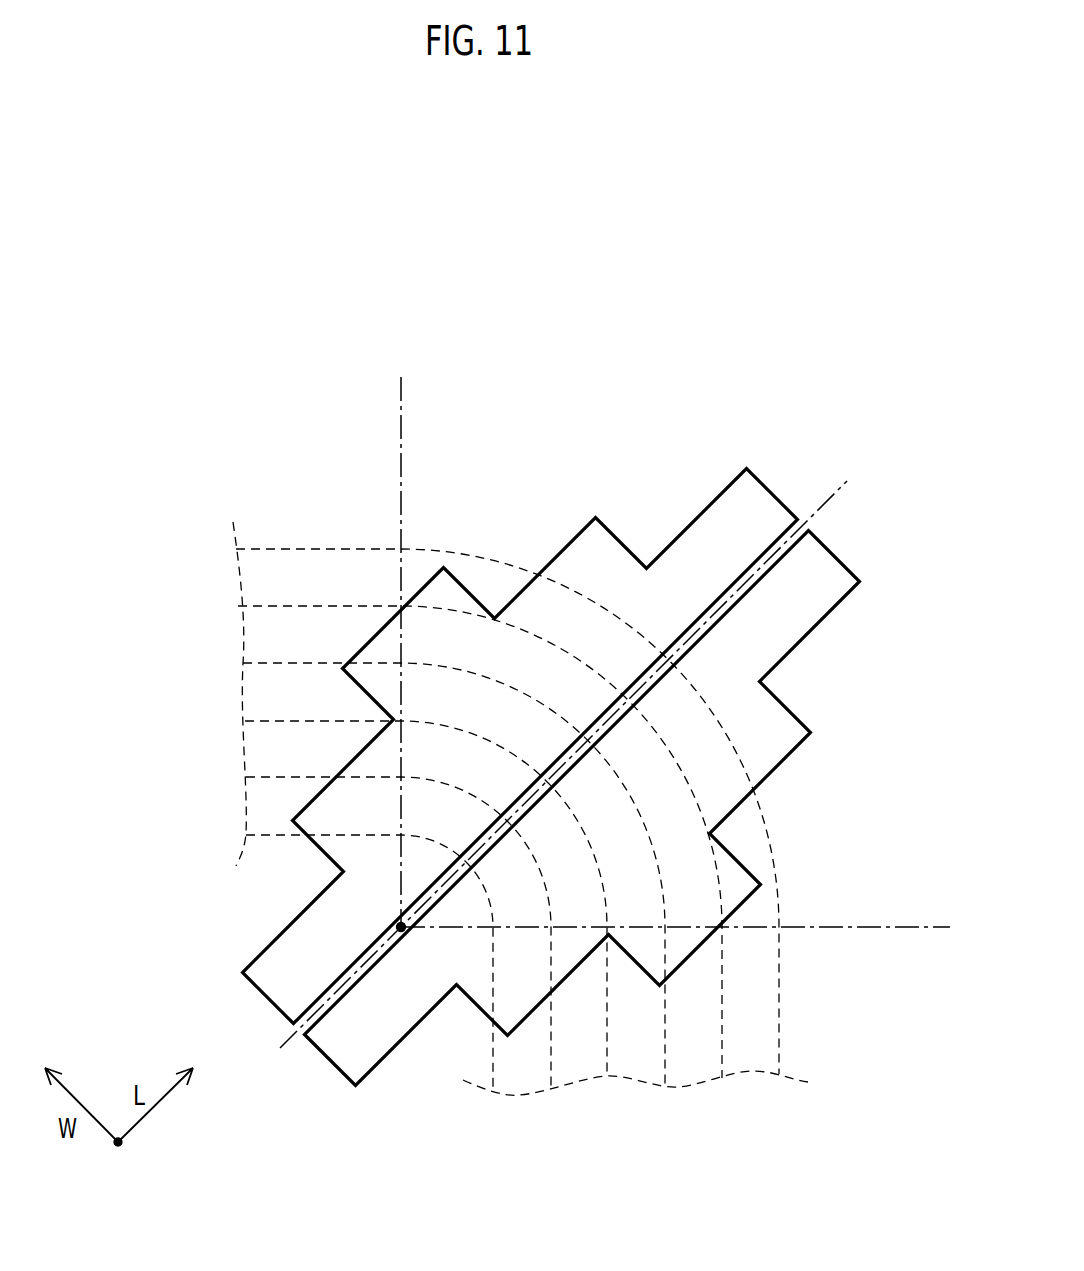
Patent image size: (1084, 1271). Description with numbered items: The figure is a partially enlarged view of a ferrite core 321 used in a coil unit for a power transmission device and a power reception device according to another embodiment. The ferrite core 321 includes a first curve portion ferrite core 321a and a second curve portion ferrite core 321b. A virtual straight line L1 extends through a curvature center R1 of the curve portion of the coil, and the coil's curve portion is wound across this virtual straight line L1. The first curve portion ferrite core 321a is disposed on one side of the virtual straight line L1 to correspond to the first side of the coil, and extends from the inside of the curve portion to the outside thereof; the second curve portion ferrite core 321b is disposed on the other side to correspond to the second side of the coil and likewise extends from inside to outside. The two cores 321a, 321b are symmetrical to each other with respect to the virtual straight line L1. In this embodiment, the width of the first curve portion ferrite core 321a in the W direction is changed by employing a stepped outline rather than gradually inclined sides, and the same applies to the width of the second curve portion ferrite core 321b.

The ferrite core 321 is at (602, 717).
The first curve portion ferrite core 321a is at (750, 518).
The second curve portion ferrite core 321b is at (808, 580).
The virtual straight line L1 is at (846, 476).
The curvature center R1 is at (402, 931).